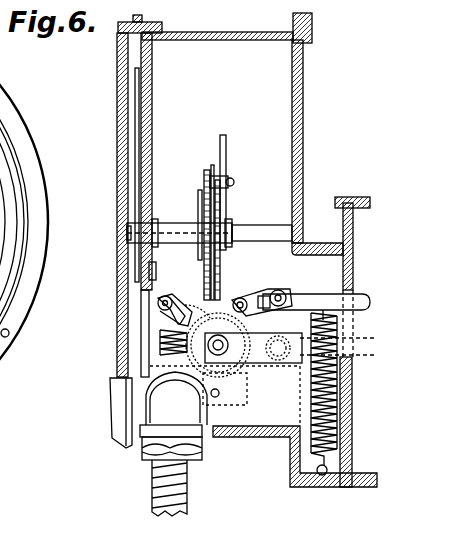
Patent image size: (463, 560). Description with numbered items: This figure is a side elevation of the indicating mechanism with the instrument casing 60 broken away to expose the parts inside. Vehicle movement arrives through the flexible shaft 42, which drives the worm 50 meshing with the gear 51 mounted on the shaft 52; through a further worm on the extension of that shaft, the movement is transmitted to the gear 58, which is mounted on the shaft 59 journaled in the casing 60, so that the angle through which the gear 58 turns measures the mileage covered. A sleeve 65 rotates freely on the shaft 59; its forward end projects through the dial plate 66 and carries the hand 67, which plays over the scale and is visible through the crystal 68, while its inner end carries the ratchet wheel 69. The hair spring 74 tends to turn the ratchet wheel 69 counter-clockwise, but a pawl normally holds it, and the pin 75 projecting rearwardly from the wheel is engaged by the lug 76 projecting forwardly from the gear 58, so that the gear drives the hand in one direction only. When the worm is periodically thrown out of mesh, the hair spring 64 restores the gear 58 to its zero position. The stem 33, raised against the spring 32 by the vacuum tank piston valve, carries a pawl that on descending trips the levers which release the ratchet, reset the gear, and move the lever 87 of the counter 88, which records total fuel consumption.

The instrument casing 60 is at (303, 122).
The crystal 68 is at (122, 168).
The dial plate 66 is at (152, 104).
The hand 67 is at (135, 100).
The sleeve 65 is at (188, 229).
The shaft 59 is at (236, 232).
The gear 58 is at (226, 153).
The pin 75 is at (211, 170).
The ratchet wheel 69 is at (205, 173).
The hair spring 64 is at (221, 196).
The hair spring 74 is at (199, 197).
The lug 76 is at (230, 180).
The counter 88 is at (176, 293).
The lever 87 is at (168, 300).
The gear 51 is at (226, 318).
The worm 50 is at (160, 345).
The stem 33 is at (305, 298).
The spring 32 is at (311, 402).
The shaft 52 is at (222, 392).
The flexible shaft 42 is at (182, 485).